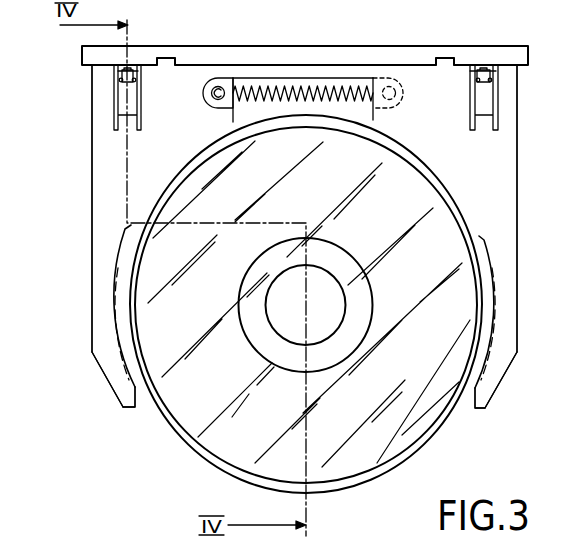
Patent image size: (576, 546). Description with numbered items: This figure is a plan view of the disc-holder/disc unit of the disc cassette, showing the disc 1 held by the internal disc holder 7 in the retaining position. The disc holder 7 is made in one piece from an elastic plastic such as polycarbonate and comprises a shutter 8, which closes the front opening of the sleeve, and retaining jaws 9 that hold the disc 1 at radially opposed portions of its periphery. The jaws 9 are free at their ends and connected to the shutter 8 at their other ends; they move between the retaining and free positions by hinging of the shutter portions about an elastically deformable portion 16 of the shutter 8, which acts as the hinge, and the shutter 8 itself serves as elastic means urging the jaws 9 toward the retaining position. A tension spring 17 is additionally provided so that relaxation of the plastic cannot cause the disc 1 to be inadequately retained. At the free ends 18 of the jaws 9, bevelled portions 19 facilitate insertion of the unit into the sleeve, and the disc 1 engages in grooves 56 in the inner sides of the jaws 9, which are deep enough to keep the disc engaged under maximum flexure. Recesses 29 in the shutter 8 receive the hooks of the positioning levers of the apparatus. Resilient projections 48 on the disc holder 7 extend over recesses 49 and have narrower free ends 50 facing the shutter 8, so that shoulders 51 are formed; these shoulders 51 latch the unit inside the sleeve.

The disc 1 is at (420, 428).
The disc holder 7 is at (518, 134).
The shutter 8 is at (376, 57).
The retaining jaws 9 is at (107, 252).
The elastically deformable portion 16 is at (313, 72).
The tension spring 17 is at (267, 90).
The free ends 18 is at (127, 409).
The bevelled portions 19 is at (100, 371).
The recesses 29 is at (171, 59).
The resilient projections 48 is at (490, 108).
The recesses 49 is at (117, 71).
The free ends 50 is at (133, 70).
The shoulders 51 is at (134, 81).
The grooves 56 is at (116, 303).